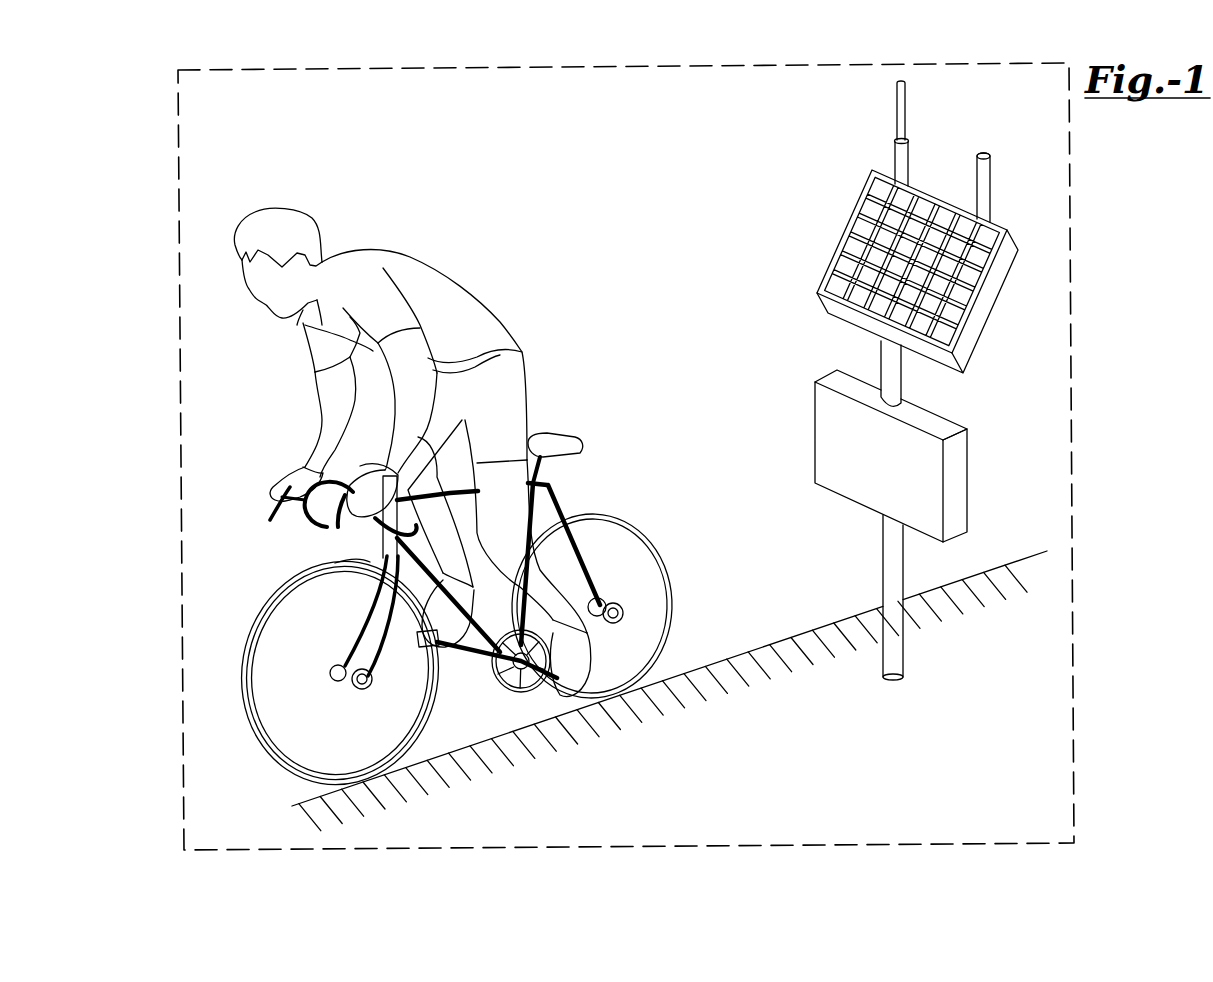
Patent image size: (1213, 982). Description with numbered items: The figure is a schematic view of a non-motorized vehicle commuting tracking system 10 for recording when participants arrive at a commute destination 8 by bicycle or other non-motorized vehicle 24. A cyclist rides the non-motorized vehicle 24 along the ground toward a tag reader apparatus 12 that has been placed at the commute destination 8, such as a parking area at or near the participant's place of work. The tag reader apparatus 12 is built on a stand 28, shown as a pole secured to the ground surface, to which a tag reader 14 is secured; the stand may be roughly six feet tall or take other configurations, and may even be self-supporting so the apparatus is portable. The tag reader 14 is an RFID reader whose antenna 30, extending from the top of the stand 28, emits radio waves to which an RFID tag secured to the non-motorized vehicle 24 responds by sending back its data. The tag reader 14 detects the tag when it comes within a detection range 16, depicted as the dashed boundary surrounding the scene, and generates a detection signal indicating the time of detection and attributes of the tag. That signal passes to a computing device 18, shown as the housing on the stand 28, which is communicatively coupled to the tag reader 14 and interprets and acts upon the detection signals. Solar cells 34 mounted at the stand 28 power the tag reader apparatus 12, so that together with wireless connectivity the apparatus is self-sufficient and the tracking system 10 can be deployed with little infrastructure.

The commute destination 8 is at (707, 663).
The tracking system 10 is at (1094, 449).
The tag reader apparatus 12 is at (870, 545).
The tag reader 14 is at (960, 406).
The detection range 16 is at (1071, 307).
The computing device 18 is at (965, 485).
The non-motorized vehicle 24 is at (622, 505).
The stand 28 is at (882, 661).
The antenna 30 is at (898, 112).
The solar cells 34 is at (838, 242).